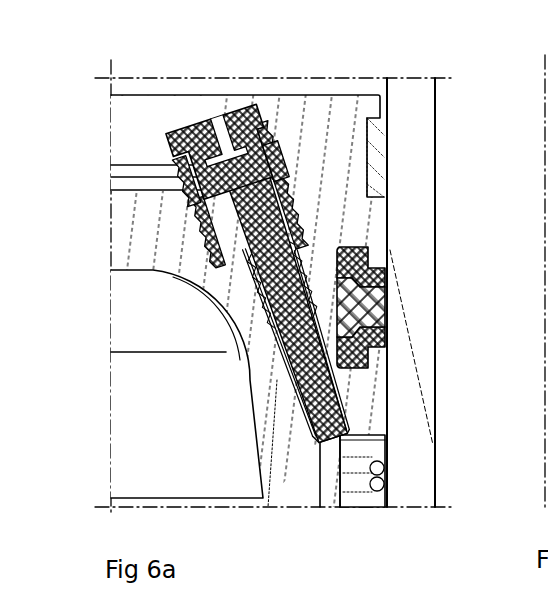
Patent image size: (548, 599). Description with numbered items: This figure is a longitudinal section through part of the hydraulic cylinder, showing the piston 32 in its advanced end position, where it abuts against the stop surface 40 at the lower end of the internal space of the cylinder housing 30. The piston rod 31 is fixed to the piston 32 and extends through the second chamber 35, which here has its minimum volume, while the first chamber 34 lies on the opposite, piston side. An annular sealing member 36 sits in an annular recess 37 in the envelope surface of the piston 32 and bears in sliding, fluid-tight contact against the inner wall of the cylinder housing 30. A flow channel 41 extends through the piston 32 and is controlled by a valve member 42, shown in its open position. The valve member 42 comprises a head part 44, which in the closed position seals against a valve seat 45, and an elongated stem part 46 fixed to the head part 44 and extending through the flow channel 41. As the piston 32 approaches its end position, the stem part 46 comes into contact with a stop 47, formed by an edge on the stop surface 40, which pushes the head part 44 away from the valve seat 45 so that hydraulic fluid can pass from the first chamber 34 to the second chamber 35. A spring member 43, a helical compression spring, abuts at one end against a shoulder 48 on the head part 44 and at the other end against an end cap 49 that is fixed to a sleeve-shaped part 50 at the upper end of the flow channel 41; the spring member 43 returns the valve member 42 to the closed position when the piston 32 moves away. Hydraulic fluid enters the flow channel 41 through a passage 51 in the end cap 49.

The cylinder housing 30 is at (420, 180).
The piston rod 31 is at (310, 502).
The piston 32 is at (317, 103).
The first chamber 34 is at (127, 132).
The second chamber 35 is at (332, 483).
The annular sealing member 36 is at (377, 308).
The annular recess 37 is at (357, 247).
The stop surface 40 is at (370, 433).
The flow channel 41 is at (290, 373).
The valve member 42 is at (270, 325).
The spring member 43 is at (223, 200).
The head part 44 is at (227, 225).
The valve seat 45 is at (285, 226).
The stem part 46 is at (310, 393).
The stop 47 is at (335, 437).
The shoulder 48 is at (283, 178).
The end cap 49 is at (187, 127).
The sleeve-shaped part 50 is at (197, 198).
The passage 51 is at (208, 125).